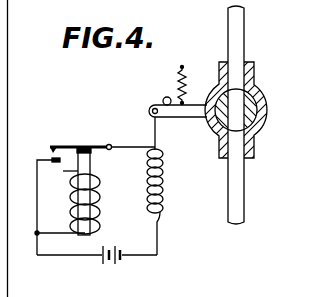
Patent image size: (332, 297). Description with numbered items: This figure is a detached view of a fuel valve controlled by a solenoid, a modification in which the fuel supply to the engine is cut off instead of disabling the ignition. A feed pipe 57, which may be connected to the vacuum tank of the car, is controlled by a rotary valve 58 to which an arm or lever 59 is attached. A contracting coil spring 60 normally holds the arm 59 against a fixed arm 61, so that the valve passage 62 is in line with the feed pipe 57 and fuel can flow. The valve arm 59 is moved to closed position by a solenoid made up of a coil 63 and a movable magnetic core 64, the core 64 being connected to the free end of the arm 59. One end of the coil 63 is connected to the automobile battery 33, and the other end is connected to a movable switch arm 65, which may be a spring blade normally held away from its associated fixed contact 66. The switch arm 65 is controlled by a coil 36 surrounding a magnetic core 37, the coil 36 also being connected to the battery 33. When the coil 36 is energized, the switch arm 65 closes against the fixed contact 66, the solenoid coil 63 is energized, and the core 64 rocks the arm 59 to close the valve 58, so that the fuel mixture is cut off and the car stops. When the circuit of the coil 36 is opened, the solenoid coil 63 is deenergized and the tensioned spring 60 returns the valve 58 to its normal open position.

The automobile battery 33 is at (118, 262).
The coil 36 is at (97, 194).
The magnetic core 37 is at (80, 227).
The feed pipe 57 is at (237, 40).
The rotary valve 58 is at (267, 113).
The arm or lever 59 is at (195, 118).
The contracting coil spring 60 is at (185, 95).
The fixed arm 61 is at (166, 97).
The valve passage 62 is at (237, 100).
The solenoid coil 63 is at (163, 185).
The movable magnetic core 64 is at (155, 127).
The movable switch arm 65 is at (73, 146).
The fixed contact 66 is at (52, 157).